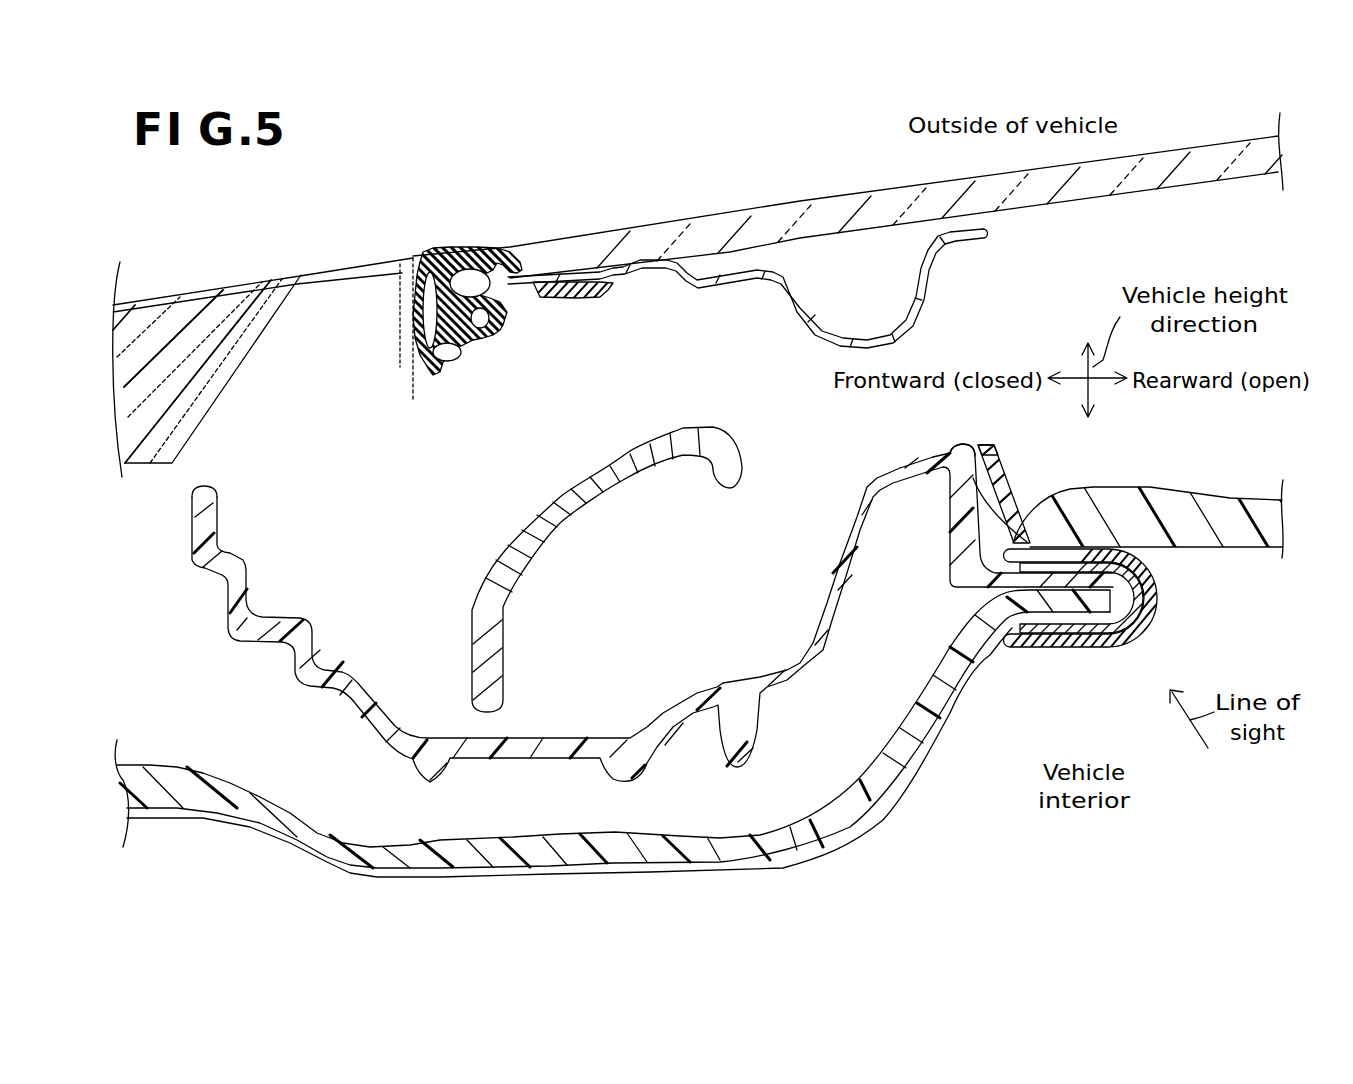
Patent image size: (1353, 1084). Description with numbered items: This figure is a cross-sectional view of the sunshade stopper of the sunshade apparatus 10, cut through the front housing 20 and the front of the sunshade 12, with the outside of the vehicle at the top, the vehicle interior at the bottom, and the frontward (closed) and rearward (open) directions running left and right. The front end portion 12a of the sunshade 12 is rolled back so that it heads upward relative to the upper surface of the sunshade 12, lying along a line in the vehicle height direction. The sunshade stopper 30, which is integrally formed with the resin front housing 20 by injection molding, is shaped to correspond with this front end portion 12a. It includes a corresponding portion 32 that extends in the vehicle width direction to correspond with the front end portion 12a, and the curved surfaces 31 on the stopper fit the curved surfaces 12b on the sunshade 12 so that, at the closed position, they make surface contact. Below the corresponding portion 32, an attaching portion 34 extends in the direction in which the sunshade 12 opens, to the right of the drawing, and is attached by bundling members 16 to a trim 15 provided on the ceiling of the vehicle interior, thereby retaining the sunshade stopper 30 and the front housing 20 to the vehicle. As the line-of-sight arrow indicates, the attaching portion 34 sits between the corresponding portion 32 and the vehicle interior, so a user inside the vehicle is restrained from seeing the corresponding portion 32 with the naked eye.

The sunshade apparatus 10 is at (395, 160).
The sunshade 12 is at (1153, 497).
The front end portion 12a is at (1008, 452).
The curved surface 12b is at (953, 455).
The trim 15 is at (883, 783).
The bundling member 16 is at (1116, 640).
The front housing 20 is at (823, 660).
The sunshade stopper 30 is at (912, 473).
The curved surface 31 is at (981, 484).
The corresponding portion 32 is at (973, 527).
The attaching portion 34 is at (1143, 567).